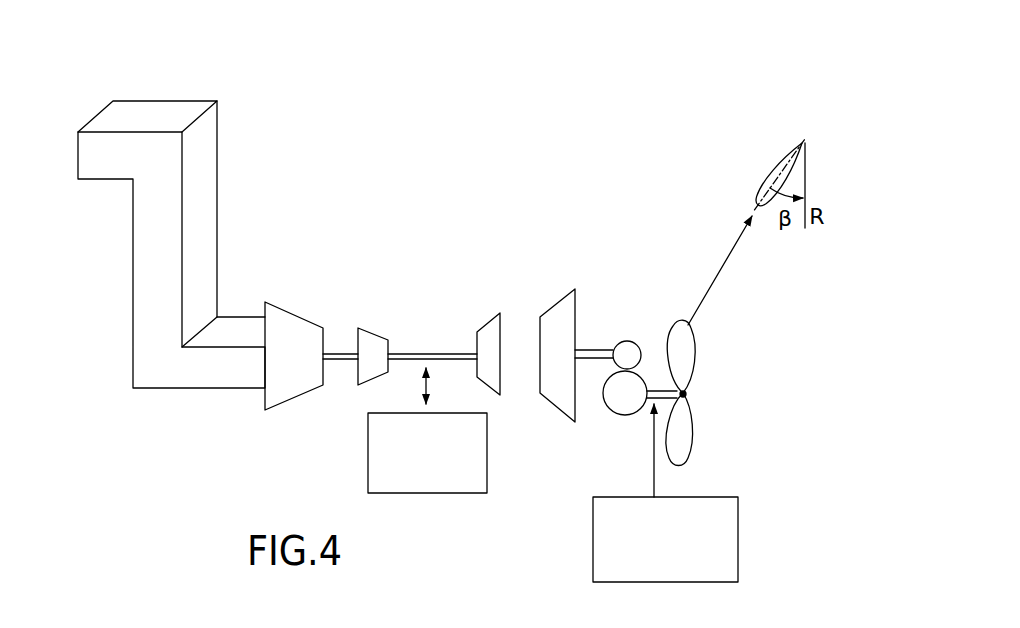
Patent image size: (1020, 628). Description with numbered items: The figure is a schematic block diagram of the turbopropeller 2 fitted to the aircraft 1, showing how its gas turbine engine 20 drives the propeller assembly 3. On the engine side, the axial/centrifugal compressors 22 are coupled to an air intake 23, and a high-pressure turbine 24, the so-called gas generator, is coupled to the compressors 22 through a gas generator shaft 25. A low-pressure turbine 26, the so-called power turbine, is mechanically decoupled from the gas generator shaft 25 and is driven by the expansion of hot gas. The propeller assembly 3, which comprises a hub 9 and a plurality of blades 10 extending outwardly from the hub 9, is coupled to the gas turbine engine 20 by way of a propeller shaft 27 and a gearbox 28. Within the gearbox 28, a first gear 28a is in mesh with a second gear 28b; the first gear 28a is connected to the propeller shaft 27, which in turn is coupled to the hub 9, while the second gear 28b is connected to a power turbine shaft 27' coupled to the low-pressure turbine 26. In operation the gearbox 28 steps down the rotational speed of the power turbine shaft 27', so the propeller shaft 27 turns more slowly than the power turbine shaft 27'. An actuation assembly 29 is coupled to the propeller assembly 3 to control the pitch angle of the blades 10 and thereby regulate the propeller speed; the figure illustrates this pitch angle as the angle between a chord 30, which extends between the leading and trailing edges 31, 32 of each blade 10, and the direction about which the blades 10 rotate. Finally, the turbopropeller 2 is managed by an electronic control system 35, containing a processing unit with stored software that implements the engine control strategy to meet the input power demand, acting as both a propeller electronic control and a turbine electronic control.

The aircraft 1 is at (611, 196).
The turbopropeller 2 is at (322, 117).
The propeller assembly 3 is at (691, 300).
The hub 9 is at (685, 394).
The blades 10 is at (689, 350).
The gas turbine engine 20 is at (371, 264).
The axial/centrifugal compressors 22 is at (333, 314).
The air intake 23 is at (243, 299).
The high-pressure turbine 24 is at (490, 330).
The gas generator shaft 25 is at (425, 353).
The low-pressure turbine 26 is at (558, 307).
The propeller shaft 27 is at (661, 352).
The power turbine shaft 27' is at (596, 309).
The gearbox 28 is at (613, 371).
The first gear 28a is at (622, 408).
The second gear 28b is at (632, 342).
The actuation assembly 29 is at (732, 528).
The chord 30 is at (778, 162).
The leading edge 31 is at (803, 143).
The trailing edge 32 is at (757, 207).
The electronic control system 35 is at (487, 470).